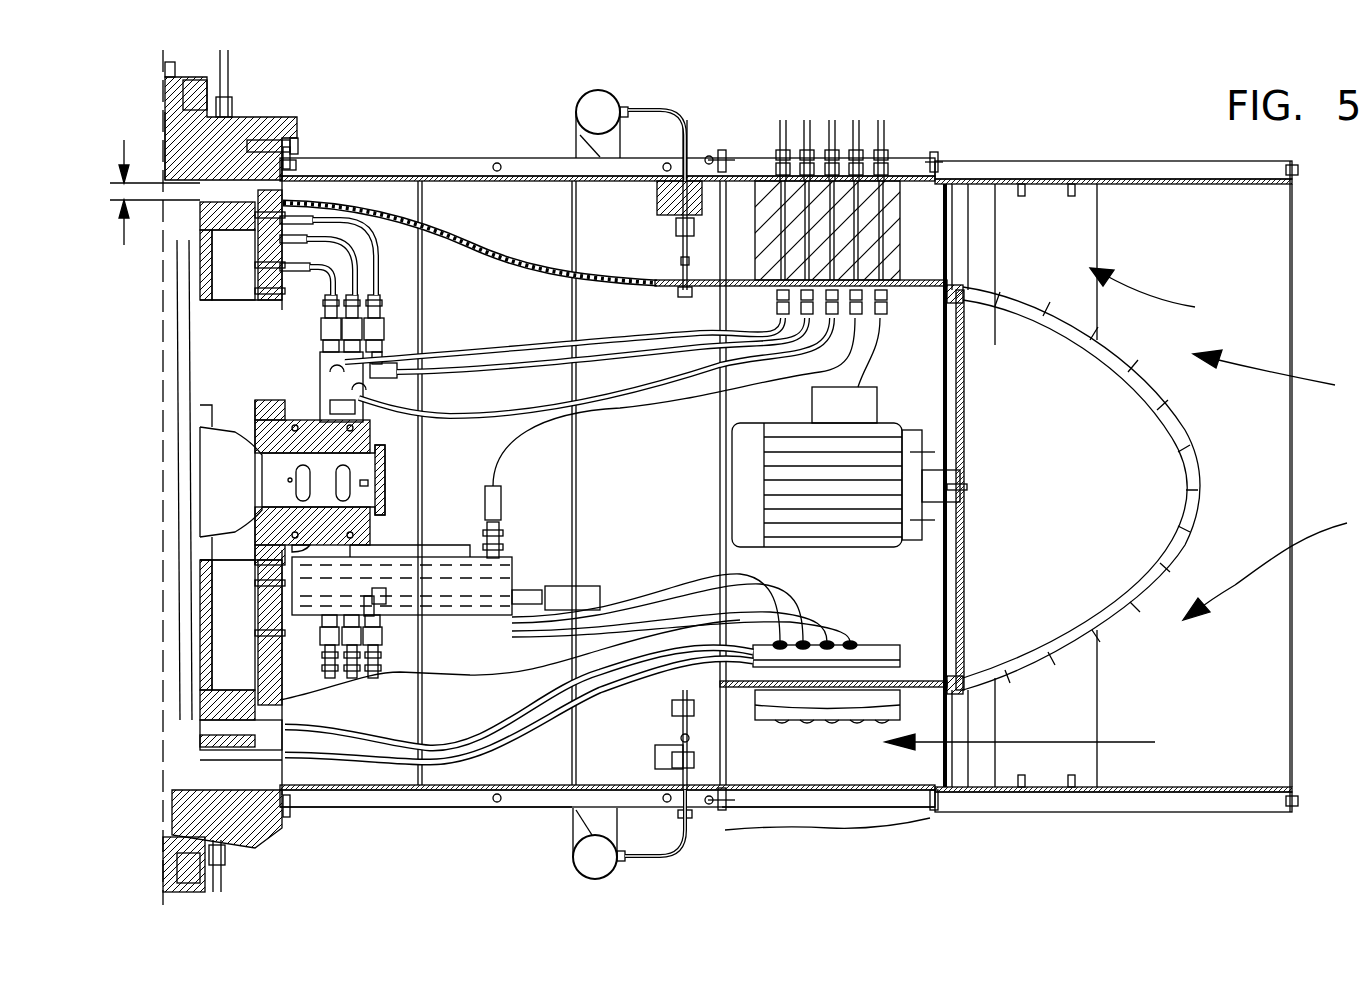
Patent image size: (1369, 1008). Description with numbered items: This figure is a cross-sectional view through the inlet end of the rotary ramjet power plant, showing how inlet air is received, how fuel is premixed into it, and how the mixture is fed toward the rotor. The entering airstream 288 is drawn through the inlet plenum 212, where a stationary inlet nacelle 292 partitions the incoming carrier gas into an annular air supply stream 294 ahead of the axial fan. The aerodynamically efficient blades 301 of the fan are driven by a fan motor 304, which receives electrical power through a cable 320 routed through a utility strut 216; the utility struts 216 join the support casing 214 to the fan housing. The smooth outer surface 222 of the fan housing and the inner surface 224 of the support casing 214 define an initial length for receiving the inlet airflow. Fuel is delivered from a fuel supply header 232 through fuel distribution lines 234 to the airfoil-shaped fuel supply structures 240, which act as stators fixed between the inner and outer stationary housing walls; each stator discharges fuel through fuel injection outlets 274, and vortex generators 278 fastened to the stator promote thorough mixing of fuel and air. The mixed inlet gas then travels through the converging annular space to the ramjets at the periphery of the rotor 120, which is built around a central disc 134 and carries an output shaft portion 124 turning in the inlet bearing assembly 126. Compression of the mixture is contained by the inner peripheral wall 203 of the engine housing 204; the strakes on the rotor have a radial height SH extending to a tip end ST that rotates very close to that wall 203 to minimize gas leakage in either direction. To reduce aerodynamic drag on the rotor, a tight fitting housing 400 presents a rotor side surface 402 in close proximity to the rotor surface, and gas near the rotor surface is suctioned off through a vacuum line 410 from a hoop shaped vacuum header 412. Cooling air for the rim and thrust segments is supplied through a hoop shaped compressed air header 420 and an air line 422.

The rotor 120 is at (175, 440).
The output shaft portion 124 is at (390, 472).
The inlet bearing assembly 126 is at (305, 420).
The central disc 134 is at (178, 300).
The inner peripheral wall 203 is at (180, 183).
The engine housing 204 is at (240, 118).
The inlet plenum 212 is at (1048, 165).
The support casing 214 is at (890, 808).
The utility struts 216 is at (763, 183).
The outer surface of fan housing 222 is at (727, 287).
The inner surface of support casing 224 is at (810, 790).
The fuel supply header 232 is at (576, 110).
The fuel distribution lines 234 is at (668, 115).
The fuel supply structure 240 is at (663, 217).
The fuel injection outlets 274 is at (660, 260).
The vortex generators 278 is at (675, 240).
The entering airstream 288 is at (1155, 300).
The inlet nacelle 292 is at (1190, 438).
The annular air supply stream 294 is at (1000, 742).
The fan blades 301 is at (943, 240).
The fan motor 304 is at (745, 480).
The cable 320 is at (882, 132).
The tight fitting housing 400 is at (230, 345).
The rotor side surface 402 is at (205, 300).
The vacuum line 410 is at (370, 268).
The vacuum header 412 is at (385, 338).
The compressed air header 420 is at (316, 330).
The air line 422 is at (325, 232).
The tip end ST is at (185, 182).
The radial height SH is at (143, 192).